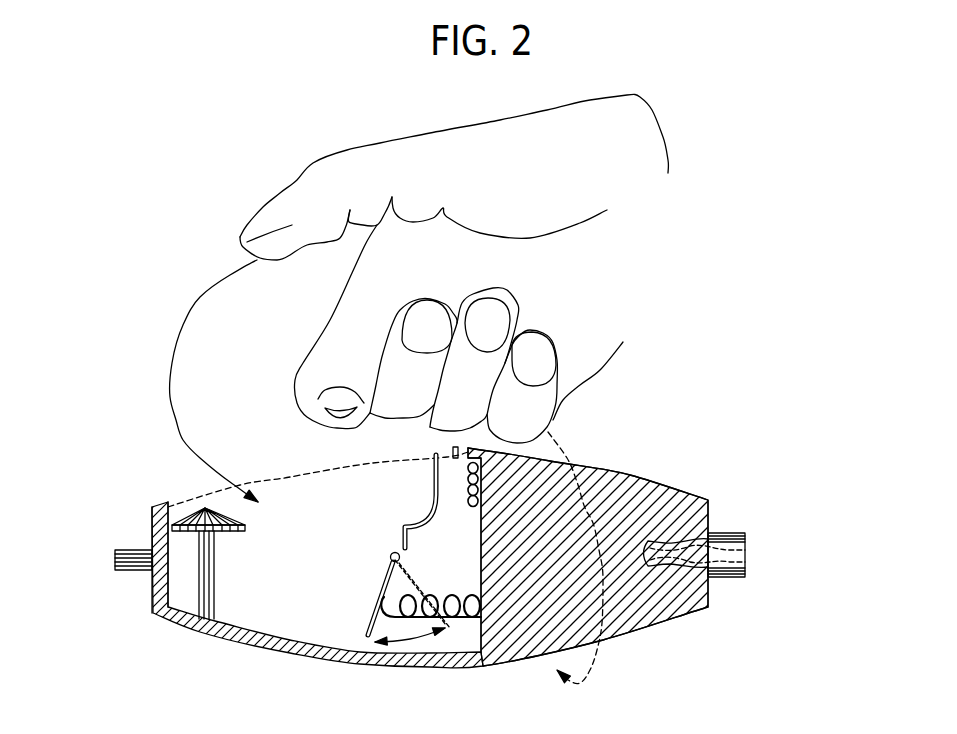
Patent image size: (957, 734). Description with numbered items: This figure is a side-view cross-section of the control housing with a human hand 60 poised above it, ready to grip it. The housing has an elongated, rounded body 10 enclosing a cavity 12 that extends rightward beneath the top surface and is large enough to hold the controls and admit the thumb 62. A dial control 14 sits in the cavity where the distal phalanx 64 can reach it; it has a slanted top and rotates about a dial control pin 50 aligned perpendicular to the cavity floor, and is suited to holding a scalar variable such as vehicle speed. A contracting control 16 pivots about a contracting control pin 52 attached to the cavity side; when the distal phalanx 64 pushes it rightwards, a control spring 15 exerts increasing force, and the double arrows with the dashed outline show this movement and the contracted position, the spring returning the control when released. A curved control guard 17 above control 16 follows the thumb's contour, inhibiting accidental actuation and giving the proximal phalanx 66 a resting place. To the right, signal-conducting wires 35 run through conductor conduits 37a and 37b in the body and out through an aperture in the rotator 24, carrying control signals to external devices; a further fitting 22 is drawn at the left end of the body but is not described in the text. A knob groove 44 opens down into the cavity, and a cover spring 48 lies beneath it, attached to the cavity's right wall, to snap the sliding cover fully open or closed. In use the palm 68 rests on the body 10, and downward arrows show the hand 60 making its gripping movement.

The body 10 is at (633, 633).
The cavity 12 is at (293, 652).
The dial control 14 is at (197, 520).
The control spring 15 is at (457, 617).
The contracting control 16 is at (390, 567).
The control guard 17 is at (430, 507).
The inlet port 22 is at (127, 558).
The rotator 24 is at (737, 572).
The signal-conducting wires 35 is at (755, 560).
The conductor conduit 37a is at (683, 535).
The conductor conduit 37b is at (650, 562).
The knob groove 44 is at (453, 452).
The cover spring 48 is at (482, 478).
The dial control pin 50 is at (190, 625).
The contracting control pin 52 is at (391, 553).
The human hand 60 is at (688, 155).
The thumb 62 is at (385, 158).
The distal phalanx 64 is at (246, 247).
The proximal phalanx 66 is at (378, 222).
The palm 68 is at (590, 255).